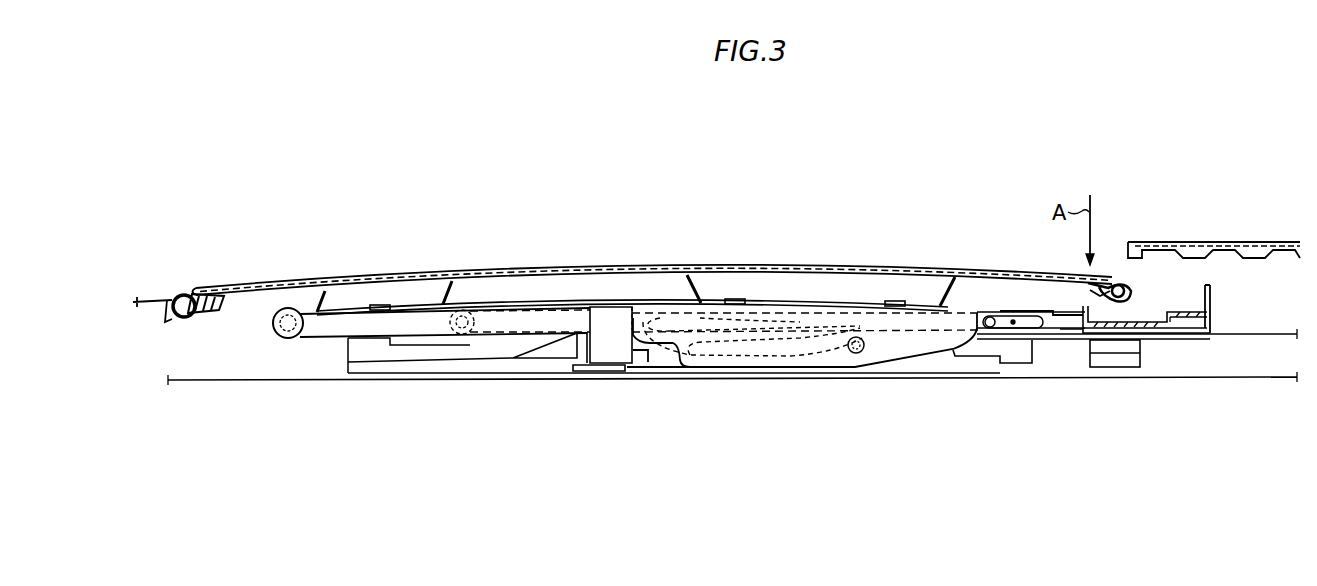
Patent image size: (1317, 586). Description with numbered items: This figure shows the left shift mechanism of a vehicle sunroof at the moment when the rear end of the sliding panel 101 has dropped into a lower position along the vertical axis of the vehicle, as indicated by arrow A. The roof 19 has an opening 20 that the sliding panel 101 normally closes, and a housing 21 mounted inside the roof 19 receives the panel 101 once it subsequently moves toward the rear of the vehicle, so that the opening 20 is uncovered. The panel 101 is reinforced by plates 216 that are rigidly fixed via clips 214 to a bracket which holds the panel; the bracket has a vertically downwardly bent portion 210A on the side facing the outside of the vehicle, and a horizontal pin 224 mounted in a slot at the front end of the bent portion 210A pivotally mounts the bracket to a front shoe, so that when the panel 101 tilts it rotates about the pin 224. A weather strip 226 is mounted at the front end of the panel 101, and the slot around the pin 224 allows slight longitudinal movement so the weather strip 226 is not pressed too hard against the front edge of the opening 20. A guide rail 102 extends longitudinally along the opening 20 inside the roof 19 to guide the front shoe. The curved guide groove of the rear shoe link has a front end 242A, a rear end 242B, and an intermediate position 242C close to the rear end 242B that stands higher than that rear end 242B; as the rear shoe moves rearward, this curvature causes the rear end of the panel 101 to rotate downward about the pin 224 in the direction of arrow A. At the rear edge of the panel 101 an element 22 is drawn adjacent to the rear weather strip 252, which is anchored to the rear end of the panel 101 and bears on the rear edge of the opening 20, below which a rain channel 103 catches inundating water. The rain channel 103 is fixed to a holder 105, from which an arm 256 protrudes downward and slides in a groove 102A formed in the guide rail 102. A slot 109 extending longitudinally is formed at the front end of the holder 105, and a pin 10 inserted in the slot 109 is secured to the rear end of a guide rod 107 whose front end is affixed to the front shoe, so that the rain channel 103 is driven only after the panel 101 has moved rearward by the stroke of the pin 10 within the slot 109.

The pin 10 is at (993, 328).
The roof 19 is at (1178, 243).
The opening 20 is at (943, 248).
The housing 21 is at (1248, 272).
The hook 22 is at (1105, 281).
The sliding panel 101 is at (695, 267).
The guide rail 102 is at (366, 355).
The groove 102A is at (1193, 338).
The rain channel 103 is at (1205, 292).
The holder 105 is at (1048, 312).
The guide rod 107 is at (884, 345).
The slot 109 is at (1017, 317).
The bent portion 210A is at (487, 350).
The clips 214 is at (378, 302).
The plates 216 is at (460, 292).
The horizontal pin 224 is at (289, 333).
The weather strip 226 is at (192, 292).
The front end of guide groove 242A is at (703, 345).
The rear end of guide groove 242B is at (855, 353).
The intermediate position of guide groove 242C is at (793, 330).
The weather strip 252 is at (1135, 315).
The arm 256 is at (1118, 368).